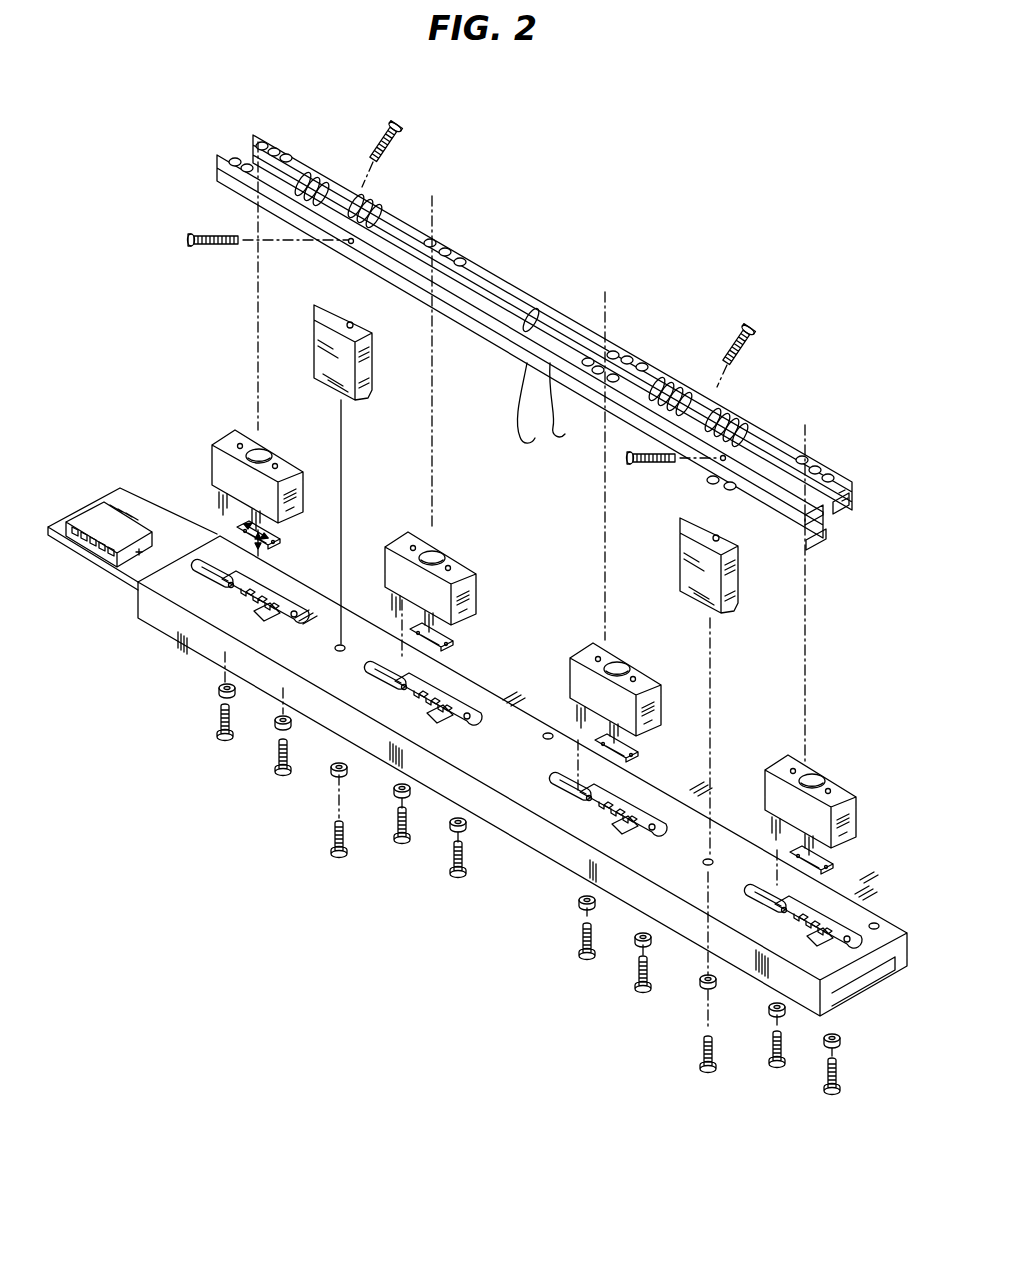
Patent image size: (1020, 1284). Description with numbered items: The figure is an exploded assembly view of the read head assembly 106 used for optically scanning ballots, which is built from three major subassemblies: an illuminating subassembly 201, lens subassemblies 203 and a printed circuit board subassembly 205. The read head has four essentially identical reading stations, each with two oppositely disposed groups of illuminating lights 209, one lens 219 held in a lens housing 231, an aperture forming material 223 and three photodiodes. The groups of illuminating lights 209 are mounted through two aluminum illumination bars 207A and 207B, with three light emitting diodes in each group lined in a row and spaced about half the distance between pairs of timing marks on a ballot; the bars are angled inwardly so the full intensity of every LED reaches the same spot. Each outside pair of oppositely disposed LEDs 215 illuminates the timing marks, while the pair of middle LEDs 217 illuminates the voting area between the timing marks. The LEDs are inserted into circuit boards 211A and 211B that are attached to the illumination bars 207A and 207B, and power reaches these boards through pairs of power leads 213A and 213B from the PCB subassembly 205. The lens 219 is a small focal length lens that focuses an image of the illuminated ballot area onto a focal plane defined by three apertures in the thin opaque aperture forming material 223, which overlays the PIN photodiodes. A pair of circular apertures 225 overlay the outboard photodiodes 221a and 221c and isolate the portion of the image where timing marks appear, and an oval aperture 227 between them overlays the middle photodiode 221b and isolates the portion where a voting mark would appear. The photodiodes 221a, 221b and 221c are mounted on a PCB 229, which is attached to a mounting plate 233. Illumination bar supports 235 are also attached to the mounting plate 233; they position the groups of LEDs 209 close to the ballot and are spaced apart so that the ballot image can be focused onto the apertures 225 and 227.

The read head assembly 106 is at (600, 232).
The illuminating subassembly 201 is at (232, 150).
The lens subassemblies 203 is at (186, 432).
The printed circuit board subassembly 205 is at (82, 492).
The illumination bar 207A is at (527, 300).
The illumination bar 207B is at (520, 343).
The groups of illuminating lights 209 is at (268, 148).
The circuit board 211A is at (848, 508).
The circuit board 211B is at (826, 533).
The power leads 213A is at (540, 435).
The power leads 213B is at (525, 443).
The outside LEDs 215 is at (431, 230).
The middle LEDs 217 is at (455, 234).
The lens 219 is at (262, 453).
The PIN photodiode 221a is at (218, 595).
The PIN photodiode 221b is at (252, 602).
The PIN photodiode 221c is at (258, 618).
The aperture forming material 223 is at (278, 542).
The apertures 225 is at (244, 522).
The aperture 227 is at (262, 551).
The PCB 229 is at (132, 590).
The lens housing 231 is at (115, 523).
The mounting plate 233 is at (180, 644).
The illumination bar supports 235 is at (372, 393).